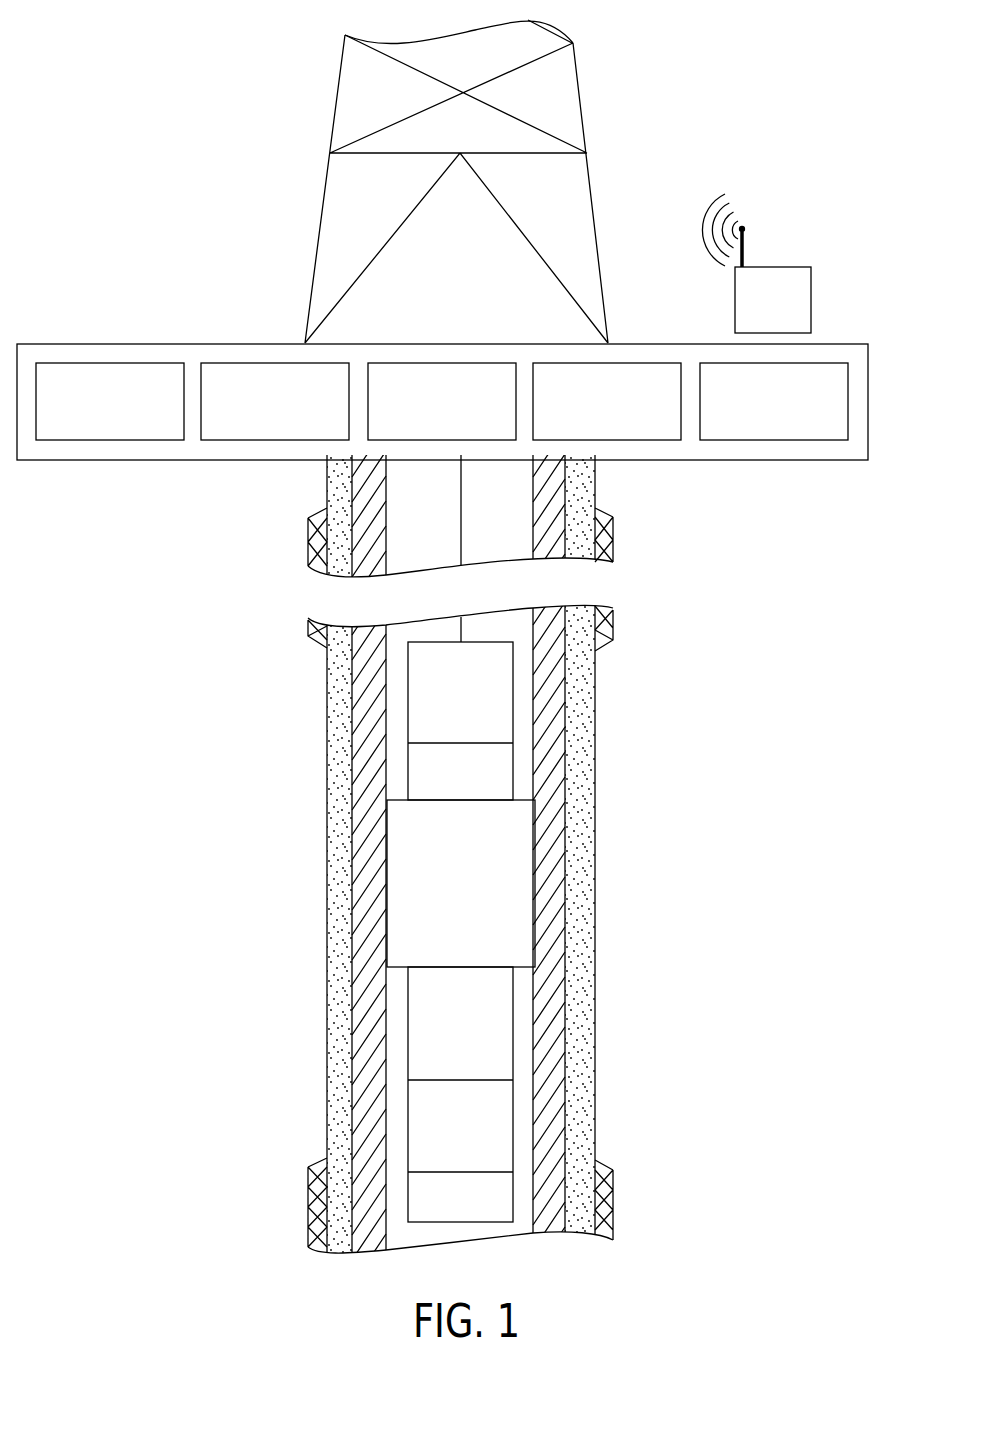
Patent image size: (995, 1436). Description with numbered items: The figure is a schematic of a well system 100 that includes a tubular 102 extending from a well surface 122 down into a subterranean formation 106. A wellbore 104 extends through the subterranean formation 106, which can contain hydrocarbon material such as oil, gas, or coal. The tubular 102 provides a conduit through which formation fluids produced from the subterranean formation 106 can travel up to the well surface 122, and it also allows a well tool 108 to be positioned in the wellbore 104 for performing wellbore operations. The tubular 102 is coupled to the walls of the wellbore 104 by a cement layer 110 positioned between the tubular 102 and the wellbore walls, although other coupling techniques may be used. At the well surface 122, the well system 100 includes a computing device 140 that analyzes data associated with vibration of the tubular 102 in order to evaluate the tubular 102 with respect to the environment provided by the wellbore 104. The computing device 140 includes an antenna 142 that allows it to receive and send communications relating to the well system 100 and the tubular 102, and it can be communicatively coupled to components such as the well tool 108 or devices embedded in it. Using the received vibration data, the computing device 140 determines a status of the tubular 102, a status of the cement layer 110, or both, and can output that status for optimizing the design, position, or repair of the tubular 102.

The well system 100 is at (156, 191).
The tubular 102 is at (366, 717).
The wellbore 104 is at (597, 474).
The subterranean formation 106 is at (609, 537).
The well tool 108 is at (538, 887).
The cement layer 110 is at (341, 786).
The well surface 122 is at (458, 343).
The computing device 140 is at (811, 308).
The antenna 142 is at (748, 252).